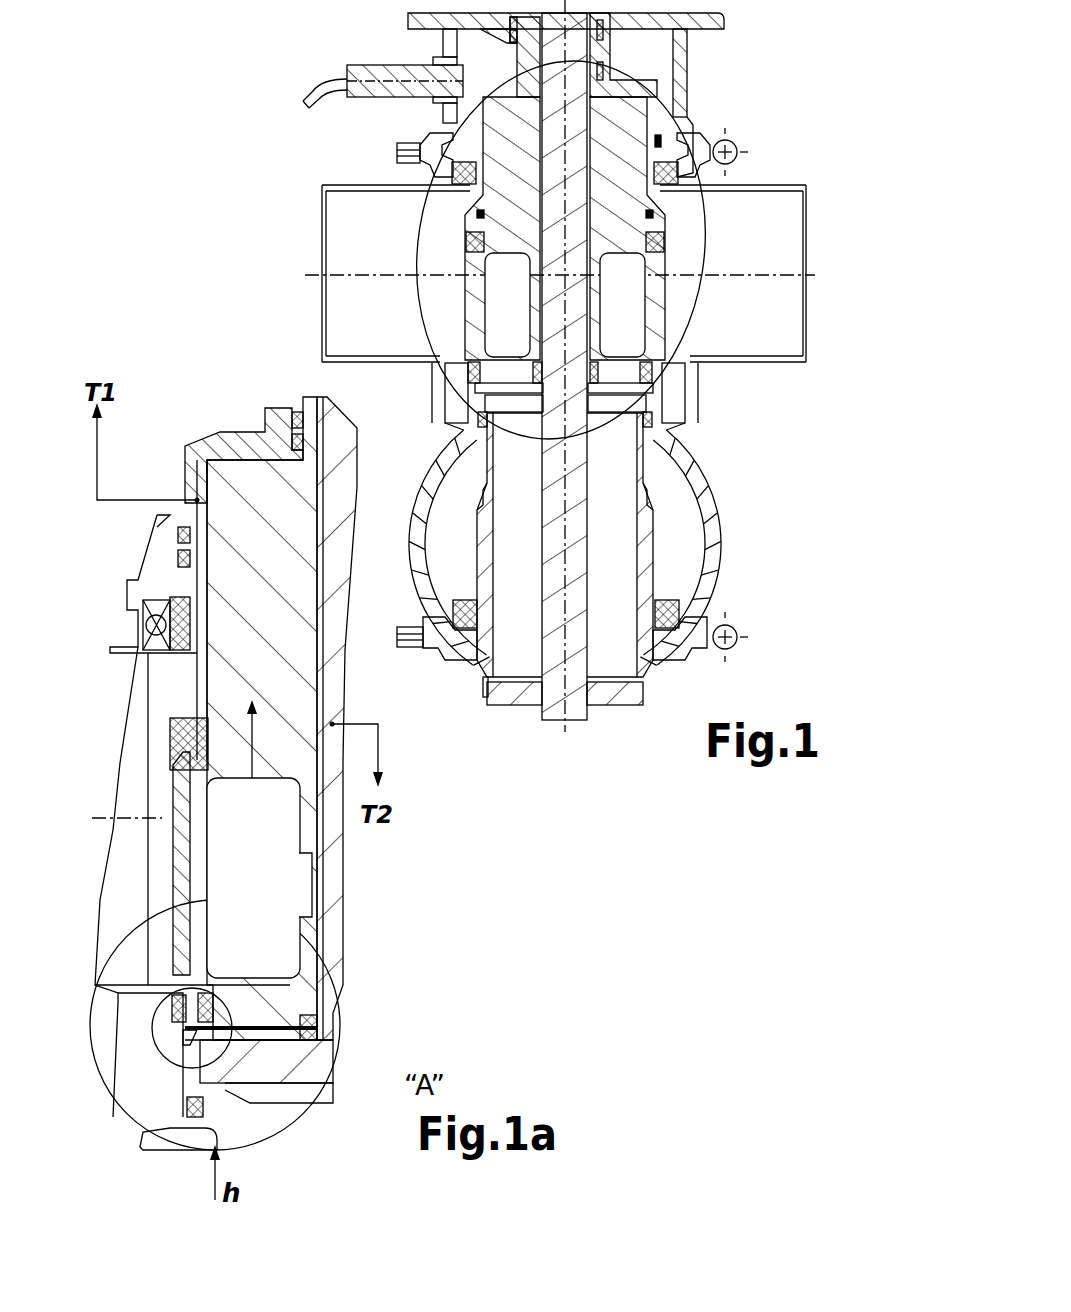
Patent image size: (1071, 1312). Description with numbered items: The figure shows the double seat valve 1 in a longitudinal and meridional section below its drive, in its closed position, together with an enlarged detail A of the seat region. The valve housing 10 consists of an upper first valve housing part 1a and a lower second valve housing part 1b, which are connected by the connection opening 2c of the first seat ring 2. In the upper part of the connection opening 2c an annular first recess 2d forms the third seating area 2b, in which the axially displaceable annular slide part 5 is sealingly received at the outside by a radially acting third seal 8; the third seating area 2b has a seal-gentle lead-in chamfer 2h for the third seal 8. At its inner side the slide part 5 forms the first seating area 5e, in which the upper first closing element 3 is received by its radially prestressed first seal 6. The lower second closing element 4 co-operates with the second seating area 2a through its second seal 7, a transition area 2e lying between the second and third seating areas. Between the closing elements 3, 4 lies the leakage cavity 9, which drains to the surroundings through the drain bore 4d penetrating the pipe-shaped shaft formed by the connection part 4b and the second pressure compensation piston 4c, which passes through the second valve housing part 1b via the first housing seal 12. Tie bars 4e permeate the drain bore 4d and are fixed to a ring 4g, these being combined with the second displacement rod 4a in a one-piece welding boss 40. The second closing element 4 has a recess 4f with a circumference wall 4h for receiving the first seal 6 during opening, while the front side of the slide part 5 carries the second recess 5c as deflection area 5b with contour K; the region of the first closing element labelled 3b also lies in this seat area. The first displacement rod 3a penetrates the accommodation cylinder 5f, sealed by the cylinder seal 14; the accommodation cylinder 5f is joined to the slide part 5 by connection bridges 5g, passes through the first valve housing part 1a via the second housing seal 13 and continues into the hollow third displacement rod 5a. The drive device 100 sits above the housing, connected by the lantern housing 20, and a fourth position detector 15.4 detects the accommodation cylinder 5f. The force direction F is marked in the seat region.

In FIG. 1, the device 100 is at (726, 36).
In FIG. 1, the double seat valve 1 is at (730, 400).
In FIG. 1, the first valve housing part 1a is at (683, 180).
In FIG. 1A, the first valve housing part 1a is at (137, 627).
In FIG. 1, the second valve housing part 1b is at (604, 544).
In FIG. 1, the first seat ring 2 is at (421, 382).
In FIG. 1A, the first seat ring 2 is at (137, 1081).
In FIG. 1A, the second seating area 2a is at (180, 1095).
In FIG. 1A, the third seating area 2b is at (170, 1003).
In FIG. 1, the connection opening 2c is at (511, 330).
In FIG. 1, the first recess 2d is at (625, 378).
In FIG. 1A, the transition area 2e is at (187, 1033).
In FIG. 1A, the lead-in chamfer 2h is at (168, 987).
In FIG. 1A, the first closing element 3 is at (331, 973).
In FIG. 1, the first displacement rod 3a is at (626, 186).
In FIG. 1A, the first displacement rod 3a is at (262, 688).
In FIG. 1A, the sealing lip 3b is at (318, 1101).
In FIG. 1, the second closing element 4 is at (630, 545).
In FIG. 1A, the second closing element 4 is at (212, 1123).
In FIG. 1, the second displacement rod 4a is at (686, 581).
In FIG. 1A, the second displacement rod 4a is at (335, 505).
In FIG. 1, the connection part 4b is at (580, 545).
In FIG. 1, the second pressure compensation piston 4c is at (719, 542).
In FIG. 1, the drain bore 4d is at (618, 609).
In FIG. 1, the tie bars 4e is at (633, 694).
In FIG. 1A, the recess 4f is at (297, 1067).
In FIG. 1, the ring 4g is at (483, 695).
In FIG. 1, the circumference wall 4h is at (538, 438).
In FIG. 1A, the circumference wall 4h is at (242, 1131).
In FIG. 1, the slide part 5 is at (602, 345).
In FIG. 1A, the slide part 5 is at (218, 959).
In FIG. 1, the third displacement rod 5a is at (648, 60).
In FIG. 1A, the third displacement rod 5a is at (280, 427).
In FIG. 1A, the deflection area 5b is at (262, 1088).
In FIG. 1A, the second recess 5c is at (233, 1080).
In FIG. 1A, the first seating area 5e is at (241, 975).
In FIG. 1, the accommodation cylinder 5f is at (662, 145).
In FIG. 1A, the accommodation cylinder 5f is at (197, 442).
In FIG. 1, the connection bridges 5g is at (705, 261).
In FIG. 1A, the connection bridges 5g is at (180, 805).
In FIG. 1, the first seal 6 is at (518, 338).
In FIG. 1A, the first seal 6 is at (298, 961).
In FIG. 1, the second seal 7 is at (520, 431).
In FIG. 1A, the second seal 7 is at (125, 1146).
In FIG. 1, the third seal 8 is at (514, 361).
In FIG. 1A, the third seal 8 is at (117, 990).
In FIG. 1, the leakage cavity 9 is at (618, 400).
In FIG. 1, the valve housing 10 is at (748, 424).
In FIG. 1, the first housing seal 12 is at (598, 631).
In FIG. 1, the second housing seal 13 is at (478, 215).
In FIG. 1A, the second housing seal 13 is at (170, 643).
In FIG. 1, the cylinder seal 14 is at (466, 240).
In FIG. 1A, the cylinder seal 14 is at (187, 735).
In FIG. 1, the fourth position detector 15.4 is at (397, 77).
In FIG. 1, the lantern housing 20 is at (457, 137).
In FIG. 1, the welding boss 40 is at (537, 690).
In FIG. 1, the detail A is at (422, 396).
In FIG. 1A, the force F is at (173, 975).
In FIG. 1A, the contour K is at (173, 1037).